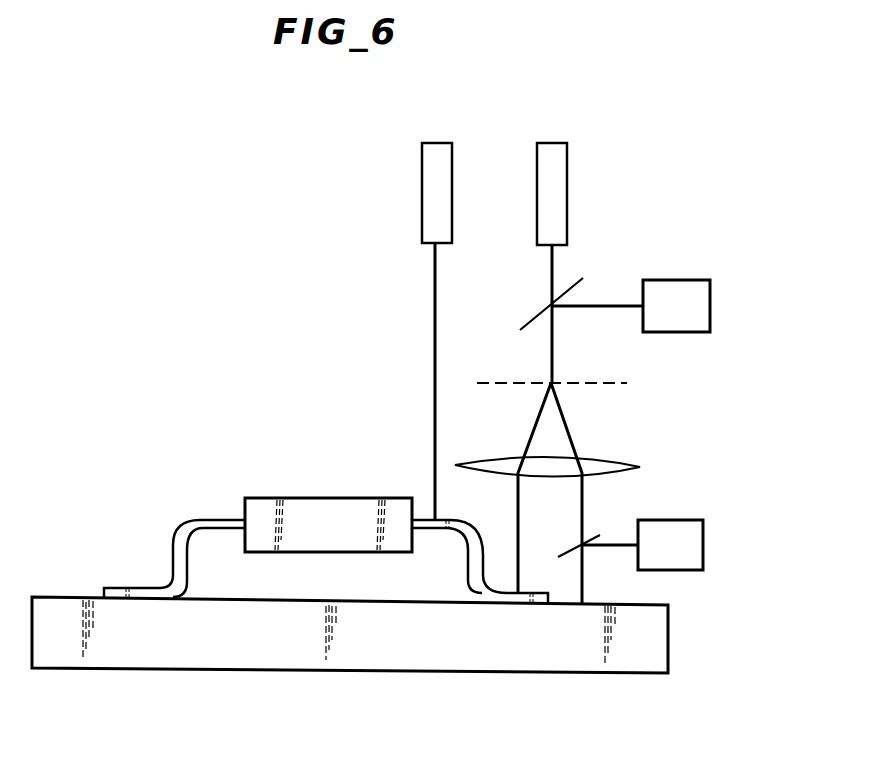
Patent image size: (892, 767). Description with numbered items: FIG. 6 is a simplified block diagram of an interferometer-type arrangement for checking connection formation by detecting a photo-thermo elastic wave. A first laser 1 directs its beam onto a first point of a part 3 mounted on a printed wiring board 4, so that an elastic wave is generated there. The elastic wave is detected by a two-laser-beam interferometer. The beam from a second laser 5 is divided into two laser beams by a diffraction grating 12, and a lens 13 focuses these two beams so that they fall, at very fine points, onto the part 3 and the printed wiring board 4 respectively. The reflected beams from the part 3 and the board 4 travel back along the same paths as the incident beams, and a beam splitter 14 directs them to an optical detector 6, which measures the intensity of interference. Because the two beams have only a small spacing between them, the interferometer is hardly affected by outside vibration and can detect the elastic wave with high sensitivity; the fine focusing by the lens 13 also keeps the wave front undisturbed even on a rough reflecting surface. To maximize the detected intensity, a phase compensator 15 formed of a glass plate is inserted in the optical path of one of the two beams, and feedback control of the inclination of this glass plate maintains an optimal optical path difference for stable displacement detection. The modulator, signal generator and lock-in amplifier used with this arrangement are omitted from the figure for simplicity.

The first laser 1 is at (422, 170).
The part 3 is at (328, 498).
The printed wiring board 4 is at (70, 597).
The second laser 5 is at (567, 170).
The optical detector 6 is at (688, 280).
The diffraction grating 12 is at (613, 383).
The lens 13 is at (632, 467).
The beam splitter 14 is at (583, 278).
The phase compensator 15 is at (690, 509).